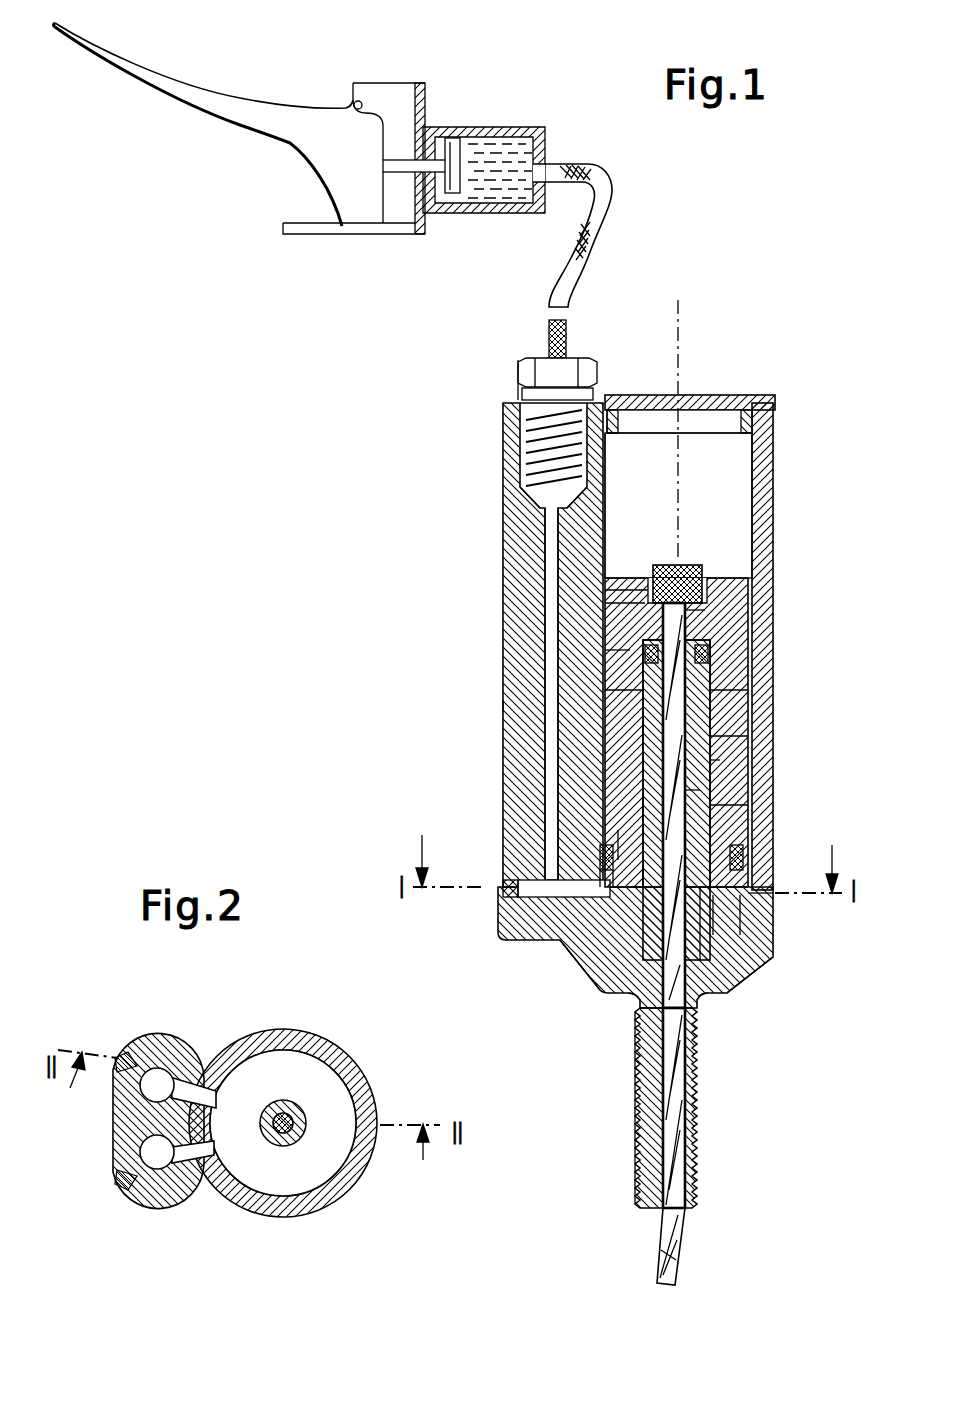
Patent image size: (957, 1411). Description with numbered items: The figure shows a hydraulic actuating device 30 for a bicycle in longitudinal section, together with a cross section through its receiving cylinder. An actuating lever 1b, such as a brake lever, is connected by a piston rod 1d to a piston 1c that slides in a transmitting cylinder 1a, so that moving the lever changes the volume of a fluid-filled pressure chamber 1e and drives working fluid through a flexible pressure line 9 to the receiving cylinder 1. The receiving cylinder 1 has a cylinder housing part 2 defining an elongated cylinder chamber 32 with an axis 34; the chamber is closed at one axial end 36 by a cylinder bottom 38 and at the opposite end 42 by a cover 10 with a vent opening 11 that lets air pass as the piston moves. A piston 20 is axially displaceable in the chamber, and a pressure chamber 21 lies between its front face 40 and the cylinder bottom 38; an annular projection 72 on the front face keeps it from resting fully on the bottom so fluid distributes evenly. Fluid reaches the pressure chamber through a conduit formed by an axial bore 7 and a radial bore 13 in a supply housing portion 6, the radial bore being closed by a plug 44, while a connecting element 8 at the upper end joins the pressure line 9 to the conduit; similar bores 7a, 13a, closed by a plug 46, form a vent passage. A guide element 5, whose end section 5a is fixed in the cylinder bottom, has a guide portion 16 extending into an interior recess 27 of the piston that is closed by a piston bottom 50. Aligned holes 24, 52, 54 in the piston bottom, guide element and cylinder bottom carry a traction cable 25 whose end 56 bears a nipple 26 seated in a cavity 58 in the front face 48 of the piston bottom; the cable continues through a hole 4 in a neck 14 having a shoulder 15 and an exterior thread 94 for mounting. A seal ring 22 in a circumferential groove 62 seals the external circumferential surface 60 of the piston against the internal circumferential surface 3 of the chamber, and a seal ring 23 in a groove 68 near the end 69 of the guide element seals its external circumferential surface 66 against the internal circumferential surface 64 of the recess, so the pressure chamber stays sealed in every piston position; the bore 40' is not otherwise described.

In FIG. 1, the receiving cylinder 1 is at (490, 707).
In FIG. 1, the transmitting cylinder 1a is at (548, 128).
In FIG. 1, the actuating lever 1b is at (212, 112).
In FIG. 1, the piston 1c is at (455, 138).
In FIG. 1, the piston rod 1d is at (398, 172).
In FIG. 1, the pressure chamber 1e is at (492, 140).
In FIG. 1, the cylinder housing part 2 is at (762, 528).
In FIG. 2, the cylinder housing part 2 is at (375, 1086).
In FIG. 1, the internal circumferential surface 3 is at (770, 472).
In FIG. 1, the hole 4 is at (688, 1075).
In FIG. 1, the guide element 5 is at (765, 832).
In FIG. 1, the end section 5a is at (740, 985).
In FIG. 2, the end section 5a is at (305, 1145).
In FIG. 1, the supply housing portion 6 is at (515, 734).
In FIG. 2, the supply housing portion 6 is at (112, 1138).
In FIG. 1, the bore 7 is at (550, 758).
In FIG. 2, the bore 7 is at (160, 1072).
In FIG. 2, the bore 7a is at (160, 1170).
In FIG. 1, the connecting element 8 is at (520, 372).
In FIG. 1, the pressure line 9 is at (600, 238).
In FIG. 1, the cover 10 is at (735, 400).
In FIG. 1, the vent opening 11 is at (700, 405).
In FIG. 1, the bore 13 is at (510, 950).
In FIG. 2, the bore 13 is at (205, 1080).
In FIG. 2, the bore 13a is at (213, 1160).
In FIG. 1, the neck 14 is at (690, 1135).
In FIG. 1, the shoulder 15 is at (722, 995).
In FIG. 1, the guide portion 16 is at (650, 692).
In FIG. 1, the piston 20 is at (730, 716).
In FIG. 1, the pressure chamber 21 is at (760, 905).
In FIG. 1, the seal ring 22 is at (600, 872).
In FIG. 1, the seal ring 23 is at (700, 660).
In FIG. 1, the hole 24 is at (745, 585).
In FIG. 1, the traction cable 25 is at (677, 1235).
In FIG. 2, the traction cable 25 is at (288, 1135).
In FIG. 1, the nipple 26 is at (682, 562).
In FIG. 1, the interior recess 27 is at (707, 760).
In FIG. 1, the actuating device 30 is at (440, 494).
In FIG. 1, the cylinder chamber 32 is at (630, 462).
In FIG. 2, the cylinder chamber 32 is at (300, 1070).
In FIG. 1, the axis 34 is at (680, 338).
In FIG. 1, the axial end 36 is at (765, 950).
In FIG. 1, the cylinder bottom 38 is at (580, 950).
In FIG. 1, the front face 40 is at (536, 822).
In FIG. 1, the bore 40' is at (785, 926).
In FIG. 1, the end 42 is at (505, 462).
In FIG. 1, the plug 44 is at (500, 905).
In FIG. 2, the plug 44 is at (128, 1054).
In FIG. 2, the plug 46 is at (125, 1180).
In FIG. 1, the front face 48 is at (600, 575).
In FIG. 1, the piston bottom 50 is at (640, 603).
In FIG. 1, the hole 52 is at (700, 792).
In FIG. 1, the hole 54 is at (630, 1006).
In FIG. 1, the end 56 is at (692, 620).
In FIG. 1, the cavity 58 is at (650, 588).
In FIG. 1, the external circumferential surface 60 is at (620, 652).
In FIG. 1, the circumferential groove 62 is at (602, 856).
In FIG. 1, the internal circumferential surface 64 is at (740, 736).
In FIG. 1, the external circumferential surface 66 is at (735, 806).
In FIG. 1, the circumferential groove 68 is at (712, 690).
In FIG. 1, the end 69 is at (710, 642).
In FIG. 1, the annular projection 72 is at (620, 978).
In FIG. 1, the exterior thread 94 is at (635, 1105).